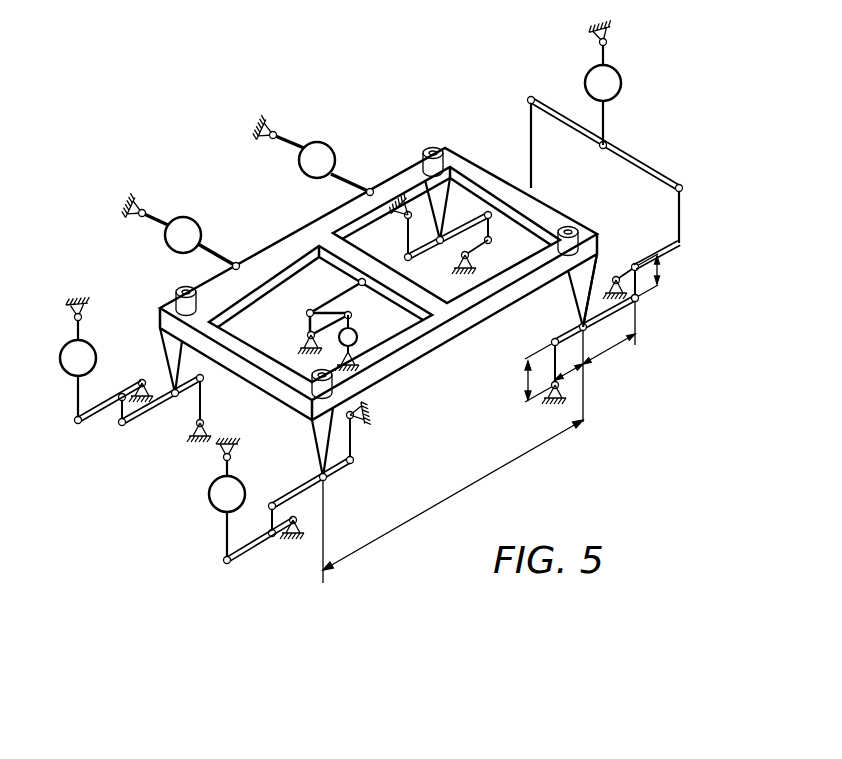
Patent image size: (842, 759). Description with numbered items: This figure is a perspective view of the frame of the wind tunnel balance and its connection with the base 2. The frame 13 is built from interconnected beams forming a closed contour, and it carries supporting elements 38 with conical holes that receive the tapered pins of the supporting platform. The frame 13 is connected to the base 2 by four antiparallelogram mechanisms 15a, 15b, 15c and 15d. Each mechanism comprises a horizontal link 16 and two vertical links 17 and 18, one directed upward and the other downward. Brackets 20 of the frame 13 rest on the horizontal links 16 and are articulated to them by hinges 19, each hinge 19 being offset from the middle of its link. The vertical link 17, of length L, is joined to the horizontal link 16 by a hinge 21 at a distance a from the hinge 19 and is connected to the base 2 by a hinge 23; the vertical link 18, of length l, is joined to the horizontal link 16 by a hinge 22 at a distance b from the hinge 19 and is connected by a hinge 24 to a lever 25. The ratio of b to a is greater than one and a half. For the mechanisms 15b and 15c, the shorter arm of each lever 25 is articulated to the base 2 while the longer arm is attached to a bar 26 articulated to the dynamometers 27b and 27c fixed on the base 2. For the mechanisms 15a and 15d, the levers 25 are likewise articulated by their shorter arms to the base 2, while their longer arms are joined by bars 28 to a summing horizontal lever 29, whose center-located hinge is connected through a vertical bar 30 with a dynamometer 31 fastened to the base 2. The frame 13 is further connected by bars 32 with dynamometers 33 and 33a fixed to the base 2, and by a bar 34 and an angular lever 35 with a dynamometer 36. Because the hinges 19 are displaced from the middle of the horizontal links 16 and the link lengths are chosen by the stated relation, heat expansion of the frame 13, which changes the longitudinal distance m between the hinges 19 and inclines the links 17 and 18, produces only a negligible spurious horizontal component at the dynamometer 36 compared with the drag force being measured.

The base 2 is at (608, 30).
The frame 13 is at (425, 350).
The antiparallelogram mechanism 15a is at (637, 353).
The antiparallelogram mechanism 15b is at (222, 567).
The antiparallelogram mechanism 15c is at (118, 430).
The antiparallelogram mechanism 15d is at (452, 218).
The horizontal link 16 is at (602, 315).
The vertical link 17 is at (560, 380).
The vertical link 18 is at (640, 300).
The hinge 19 is at (580, 325).
The bracket 20 is at (594, 276).
The hinge 21 is at (552, 341).
The hinge 22 is at (640, 304).
The hinge 23 is at (560, 388).
The hinge 24 is at (637, 264).
The lever 25 is at (670, 253).
The bar 26 is at (72, 392).
The dynamometer 27b is at (210, 500).
The dynamometer 27c is at (60, 358).
The bar 28 is at (532, 168).
The summing horizontal lever 29 is at (632, 158).
The vertical bar 30 is at (606, 118).
The dynamometer 31 is at (620, 80).
The bar 32 is at (360, 180).
The dynamometer 33 is at (188, 222).
The dynamometer 33a is at (322, 143).
The bar 34 is at (338, 302).
The angular lever 35 is at (307, 323).
The dynamometer 36 is at (358, 336).
The supporting element 38 is at (178, 287).